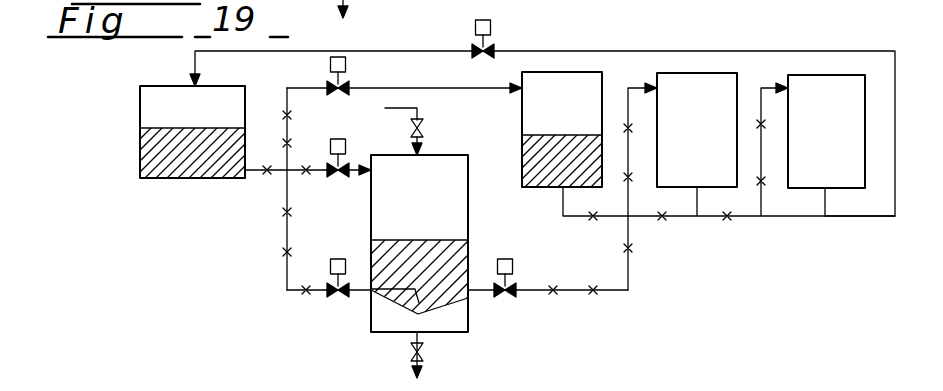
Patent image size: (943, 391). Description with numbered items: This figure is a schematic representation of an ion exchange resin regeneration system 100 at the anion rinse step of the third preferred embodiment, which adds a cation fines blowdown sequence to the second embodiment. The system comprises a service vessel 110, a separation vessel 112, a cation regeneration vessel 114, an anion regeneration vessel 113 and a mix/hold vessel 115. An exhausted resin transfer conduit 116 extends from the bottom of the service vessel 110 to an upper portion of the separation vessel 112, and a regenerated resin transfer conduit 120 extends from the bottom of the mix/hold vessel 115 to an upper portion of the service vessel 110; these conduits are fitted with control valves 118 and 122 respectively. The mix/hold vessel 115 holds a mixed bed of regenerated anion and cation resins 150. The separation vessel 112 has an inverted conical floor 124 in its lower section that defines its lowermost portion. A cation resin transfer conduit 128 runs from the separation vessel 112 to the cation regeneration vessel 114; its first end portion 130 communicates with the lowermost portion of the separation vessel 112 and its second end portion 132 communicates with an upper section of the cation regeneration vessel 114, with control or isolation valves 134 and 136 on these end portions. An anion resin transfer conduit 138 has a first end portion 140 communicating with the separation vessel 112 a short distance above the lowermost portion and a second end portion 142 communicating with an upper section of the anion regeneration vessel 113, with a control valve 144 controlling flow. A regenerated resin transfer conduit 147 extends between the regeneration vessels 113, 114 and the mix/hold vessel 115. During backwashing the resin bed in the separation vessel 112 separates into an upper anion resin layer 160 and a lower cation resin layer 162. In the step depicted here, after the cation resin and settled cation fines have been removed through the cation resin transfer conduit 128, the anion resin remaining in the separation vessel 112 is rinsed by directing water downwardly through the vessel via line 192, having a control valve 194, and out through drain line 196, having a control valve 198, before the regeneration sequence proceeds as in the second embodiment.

The system 100 is at (376, 9).
The service vessel 110 is at (140, 104).
The mixed bed of regenerated anion and cation resins 150 is at (158, 158).
The exhausted resin transfer conduit 116 is at (278, 172).
The cation resin transfer conduit 128 is at (287, 232).
The second end portion of cation resin transfer conduit 132 is at (478, 86).
The control or isolation valve 136 is at (345, 83).
The control valve 118 is at (343, 166).
The separation vessel 112 is at (371, 200).
The upper anion resin layer 160 is at (428, 250).
The first end portion of cation resin transfer conduit 130 is at (385, 301).
The inverted conical floor 124 is at (436, 308).
The drain line 196 is at (426, 350).
The control valve 198 is at (424, 366).
The rinse water line 192 is at (418, 112).
The control valve 194 is at (424, 130).
The control valve 122 is at (490, 48).
The regenerated resin transfer conduit 120 is at (628, 51).
The second end portion of anion resin transfer conduit 142 is at (632, 88).
The cation regeneration vessel 114 is at (522, 104).
The lower cation resin layer 162 is at (530, 160).
The anion regeneration vessel 113 is at (737, 88).
The mix/hold vessel 115 is at (866, 100).
The regenerated resin transfer conduit 147 is at (745, 220).
The anion resin transfer conduit 138 is at (630, 266).
The first end portion of anion resin transfer conduit 140 is at (494, 288).
The control valve 144 is at (510, 286).
The control or isolation valve 134 is at (340, 296).